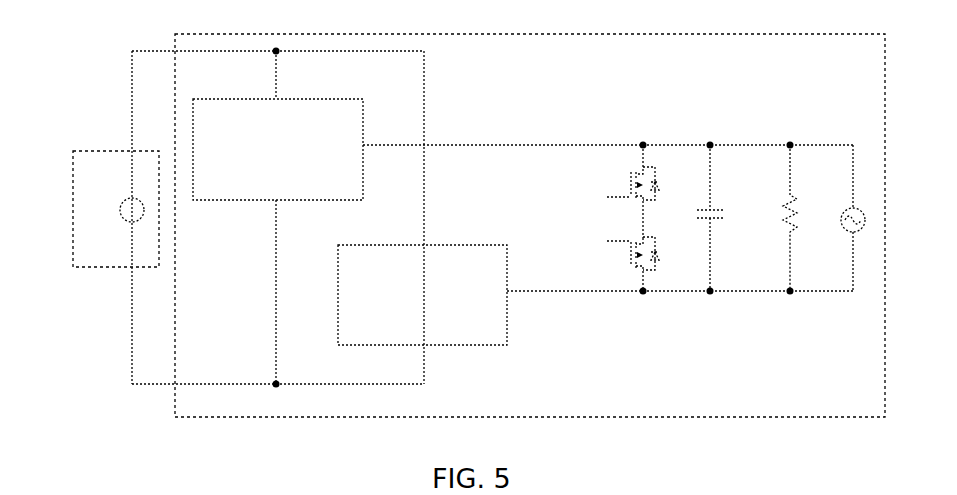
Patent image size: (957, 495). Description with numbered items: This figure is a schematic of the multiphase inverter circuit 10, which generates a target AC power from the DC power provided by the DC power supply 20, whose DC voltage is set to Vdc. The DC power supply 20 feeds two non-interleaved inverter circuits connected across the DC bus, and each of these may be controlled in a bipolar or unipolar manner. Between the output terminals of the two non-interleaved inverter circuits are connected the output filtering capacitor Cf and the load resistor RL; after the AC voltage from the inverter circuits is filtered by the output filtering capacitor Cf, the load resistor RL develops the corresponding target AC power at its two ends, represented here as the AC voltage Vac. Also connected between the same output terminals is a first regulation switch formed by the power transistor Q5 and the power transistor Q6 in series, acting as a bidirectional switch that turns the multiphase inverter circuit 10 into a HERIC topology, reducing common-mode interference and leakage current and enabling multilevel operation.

The multiphase inverter circuit 10 is at (726, 34).
The DC power supply 20 is at (105, 194).
The power transistor Q5 is at (631, 191).
The power transistor Q6 is at (631, 264).
The output filtering capacitor Cf is at (703, 218).
The load resistor RL is at (778, 218).
The DC voltage Vdc is at (117, 210).
The AC voltage source Vac is at (836, 220).